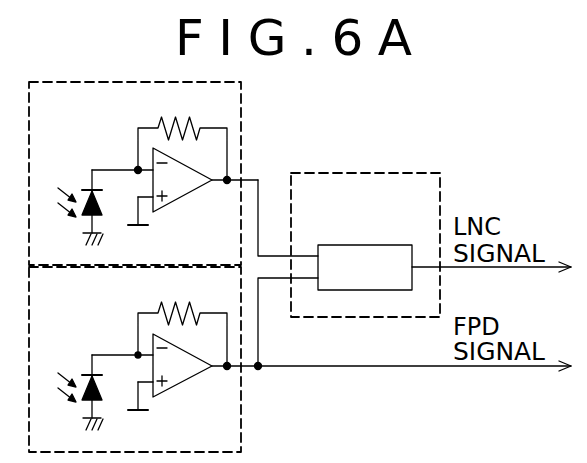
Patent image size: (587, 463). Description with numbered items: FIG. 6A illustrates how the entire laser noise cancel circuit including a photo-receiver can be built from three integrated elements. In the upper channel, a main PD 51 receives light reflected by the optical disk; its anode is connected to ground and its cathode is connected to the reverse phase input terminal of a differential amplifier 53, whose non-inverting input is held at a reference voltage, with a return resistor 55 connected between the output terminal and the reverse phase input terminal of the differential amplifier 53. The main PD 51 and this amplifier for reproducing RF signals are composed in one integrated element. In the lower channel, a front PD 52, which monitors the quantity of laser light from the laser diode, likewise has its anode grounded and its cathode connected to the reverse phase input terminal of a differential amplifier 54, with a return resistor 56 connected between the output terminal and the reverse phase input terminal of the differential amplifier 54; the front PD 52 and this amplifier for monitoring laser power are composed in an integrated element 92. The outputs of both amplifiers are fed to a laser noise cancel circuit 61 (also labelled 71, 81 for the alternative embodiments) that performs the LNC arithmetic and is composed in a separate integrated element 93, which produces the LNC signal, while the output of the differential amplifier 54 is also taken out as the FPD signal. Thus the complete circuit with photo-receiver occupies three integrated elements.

The main PD 51 is at (88, 186).
The front PD 52 is at (88, 371).
The differential amplifier 53 is at (188, 194).
The differential amplifier 54 is at (188, 379).
The return resistor 55 is at (170, 121).
The return resistor 56 is at (170, 306).
The laser noise cancel circuit 61 is at (366, 241).
The signal processing circuit 71 is at (365, 267).
The signal processing circuit 81 is at (366, 244).
The integrated element 92 is at (241, 414).
The integrated element 93 is at (365, 210).